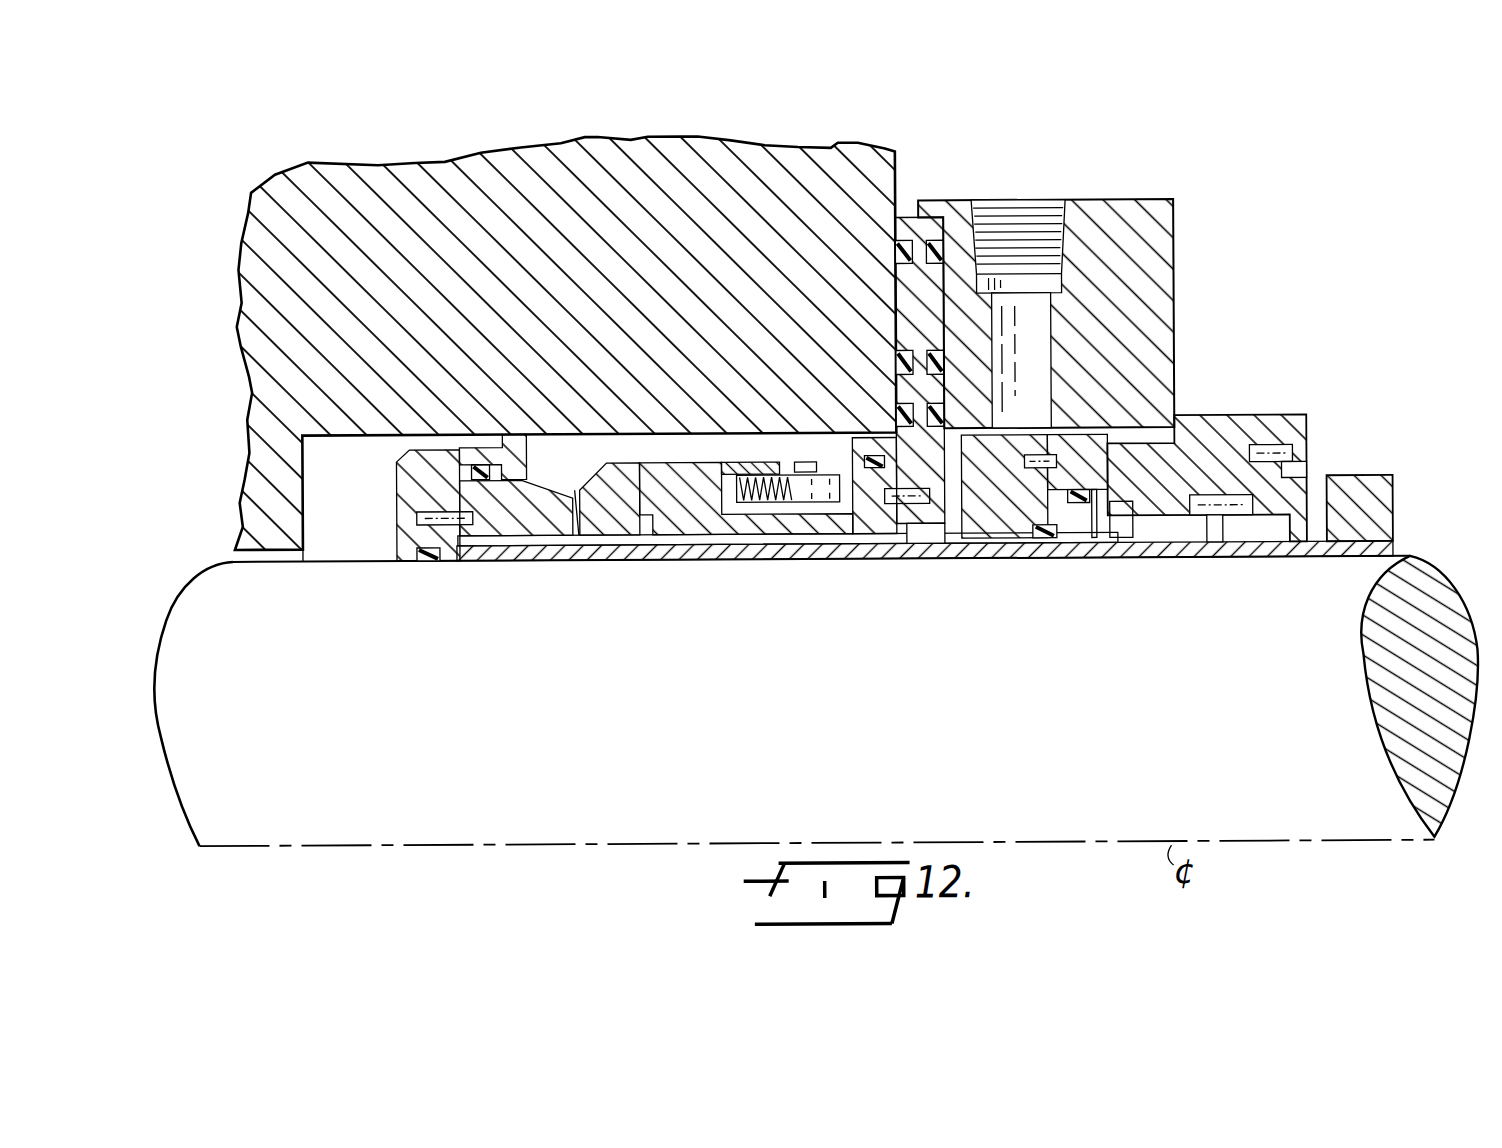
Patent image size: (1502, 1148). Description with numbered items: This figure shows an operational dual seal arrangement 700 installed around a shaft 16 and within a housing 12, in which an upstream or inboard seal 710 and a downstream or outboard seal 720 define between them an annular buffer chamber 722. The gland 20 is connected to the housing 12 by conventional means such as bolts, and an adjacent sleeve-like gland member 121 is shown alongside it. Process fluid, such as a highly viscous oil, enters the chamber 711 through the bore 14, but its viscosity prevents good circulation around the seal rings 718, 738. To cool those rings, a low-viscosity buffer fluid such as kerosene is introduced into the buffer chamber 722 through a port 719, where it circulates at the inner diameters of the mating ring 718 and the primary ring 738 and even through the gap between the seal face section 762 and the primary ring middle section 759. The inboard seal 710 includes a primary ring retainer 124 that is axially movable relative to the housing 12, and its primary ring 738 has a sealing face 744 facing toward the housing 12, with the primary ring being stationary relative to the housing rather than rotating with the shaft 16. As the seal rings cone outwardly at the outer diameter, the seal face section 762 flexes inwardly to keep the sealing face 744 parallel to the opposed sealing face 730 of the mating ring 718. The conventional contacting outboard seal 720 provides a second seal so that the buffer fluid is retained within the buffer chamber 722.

The housing 12 is at (470, 166).
The bore 14 is at (268, 550).
The shaft 16 is at (326, 836).
The gland 20 is at (1175, 239).
The gland sleeve adapter 121 is at (908, 221).
The primary ring retainer 124 is at (738, 478).
The dual seal arrangement 700 is at (1232, 320).
The inboard seal 710 is at (601, 458).
The chamber 711 is at (349, 492).
The mating ring 718 is at (521, 530).
The port 719 is at (1046, 214).
The outboard seal 720 is at (1134, 444).
The buffer chamber 722 is at (960, 526).
The sealing face 730 is at (587, 526).
The primary ring 738 is at (613, 543).
The sealing face 744 is at (563, 530).
The primary ring middle section 759 is at (665, 522).
The seal face section 762 is at (590, 520).